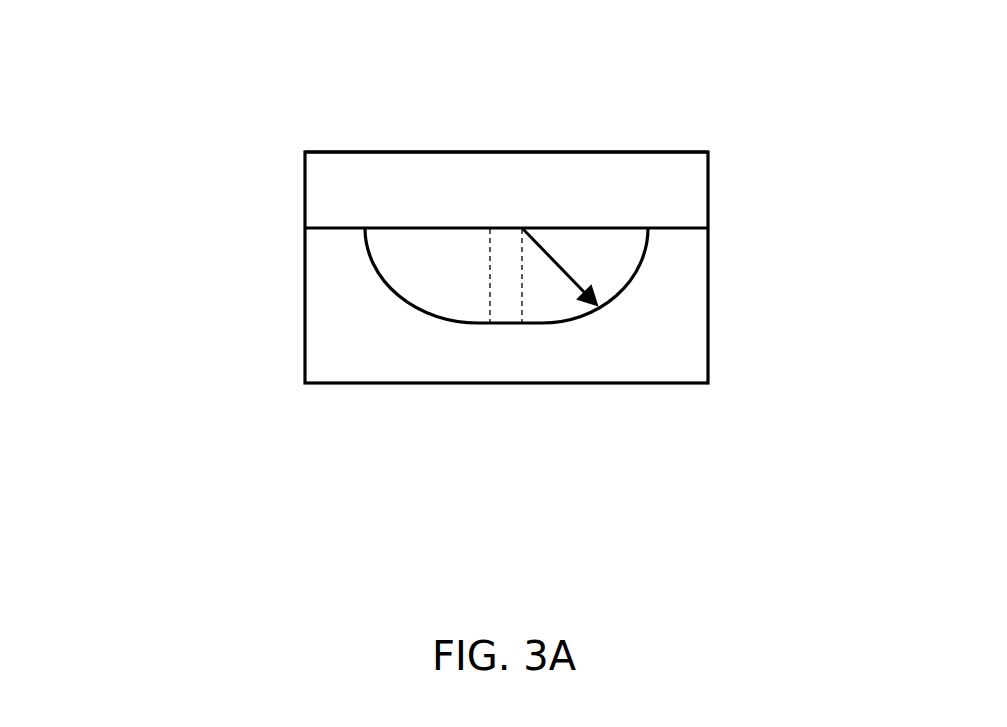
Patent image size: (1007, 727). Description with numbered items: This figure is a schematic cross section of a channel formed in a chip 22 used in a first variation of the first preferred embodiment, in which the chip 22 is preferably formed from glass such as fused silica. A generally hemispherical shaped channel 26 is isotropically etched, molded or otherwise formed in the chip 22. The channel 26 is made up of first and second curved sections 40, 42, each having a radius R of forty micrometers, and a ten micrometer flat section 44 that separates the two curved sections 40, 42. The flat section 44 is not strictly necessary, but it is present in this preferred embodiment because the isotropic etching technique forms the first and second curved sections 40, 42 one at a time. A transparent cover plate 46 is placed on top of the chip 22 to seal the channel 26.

The chip 22 is at (698, 285).
The channel 26 is at (400, 258).
The first curved section 40 is at (397, 300).
The second curved section 42 is at (572, 318).
The flat section 44 is at (503, 327).
The transparent cover plate 46 is at (533, 175).